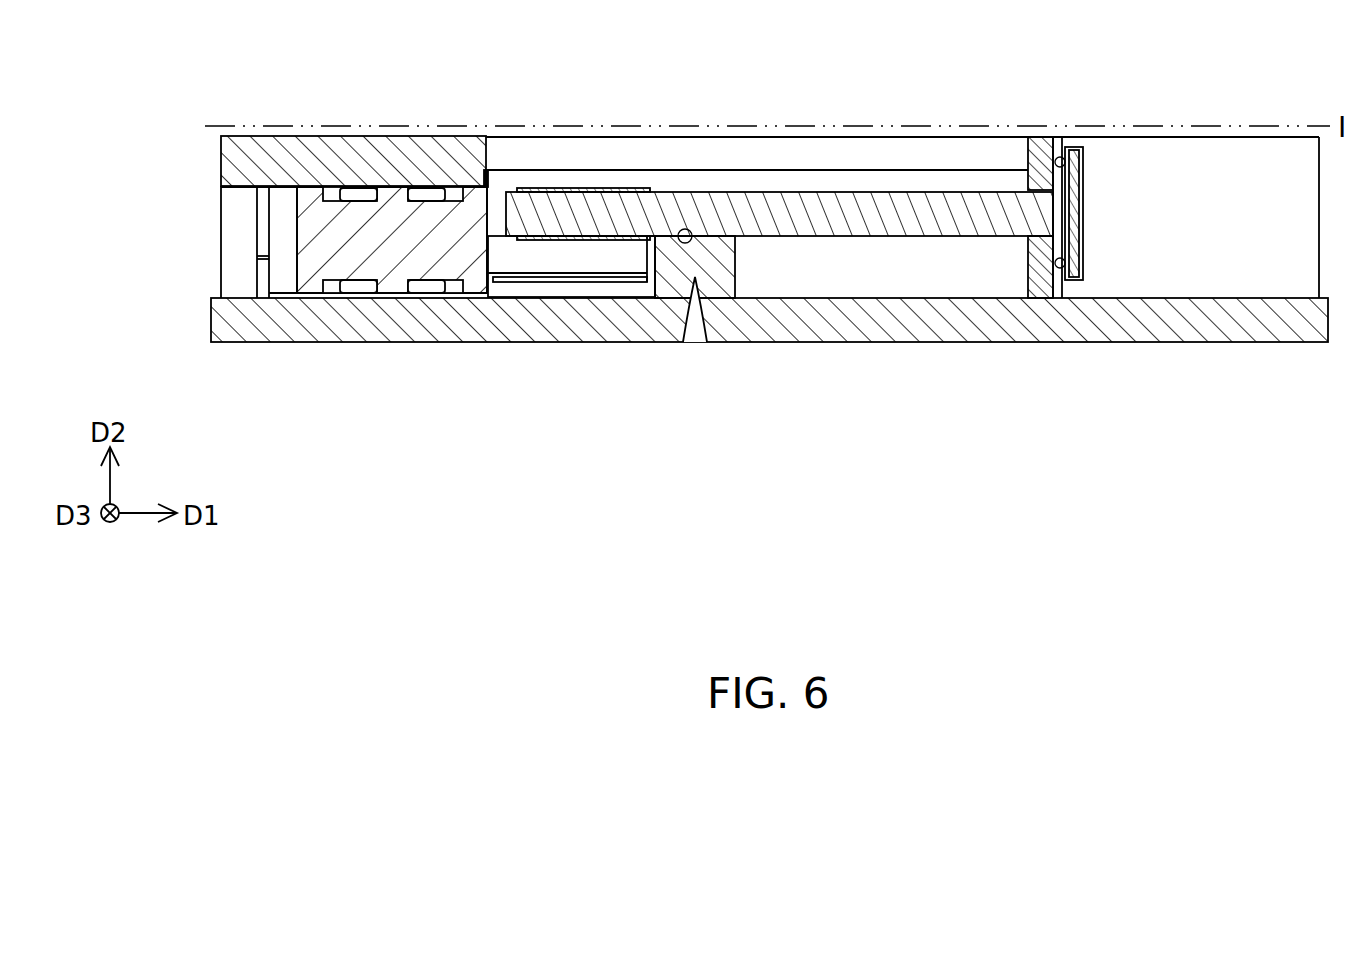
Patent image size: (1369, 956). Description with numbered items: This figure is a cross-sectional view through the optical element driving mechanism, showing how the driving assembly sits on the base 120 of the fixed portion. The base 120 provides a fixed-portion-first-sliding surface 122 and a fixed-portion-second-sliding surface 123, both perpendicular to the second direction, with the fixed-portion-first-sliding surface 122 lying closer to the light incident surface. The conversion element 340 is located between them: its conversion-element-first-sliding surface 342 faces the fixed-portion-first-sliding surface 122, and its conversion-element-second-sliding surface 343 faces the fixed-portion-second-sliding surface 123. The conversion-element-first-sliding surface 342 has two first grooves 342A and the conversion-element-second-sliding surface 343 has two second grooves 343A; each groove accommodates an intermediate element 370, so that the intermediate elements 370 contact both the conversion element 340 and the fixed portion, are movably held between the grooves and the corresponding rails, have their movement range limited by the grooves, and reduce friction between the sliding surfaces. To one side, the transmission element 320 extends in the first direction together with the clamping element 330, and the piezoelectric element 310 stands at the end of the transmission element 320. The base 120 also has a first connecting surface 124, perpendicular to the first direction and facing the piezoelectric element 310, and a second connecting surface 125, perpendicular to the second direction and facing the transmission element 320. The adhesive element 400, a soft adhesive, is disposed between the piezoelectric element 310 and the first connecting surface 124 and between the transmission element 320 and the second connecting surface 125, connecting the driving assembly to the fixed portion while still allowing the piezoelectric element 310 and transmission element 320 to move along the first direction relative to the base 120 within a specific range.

The base 120 is at (887, 343).
The fixed-portion-first-sliding surface 122 is at (298, 230).
The fixed-portion-second-sliding surface 123 is at (390, 292).
The first connecting surface 124 is at (1047, 150).
The second connecting surface 125 is at (727, 232).
The piezoelectric element 310 is at (1073, 147).
The transmission element 320 is at (888, 192).
The clamping element 330 is at (613, 188).
The conversion element 340 is at (477, 290).
The conversion-element-first-sliding surface 342 is at (327, 213).
The first groove 342A is at (333, 190).
The conversion-element-second-sliding surface 343 is at (312, 289).
The second groove 343A is at (332, 292).
The intermediate element 370 is at (363, 190).
The adhesive element 400 is at (685, 229).